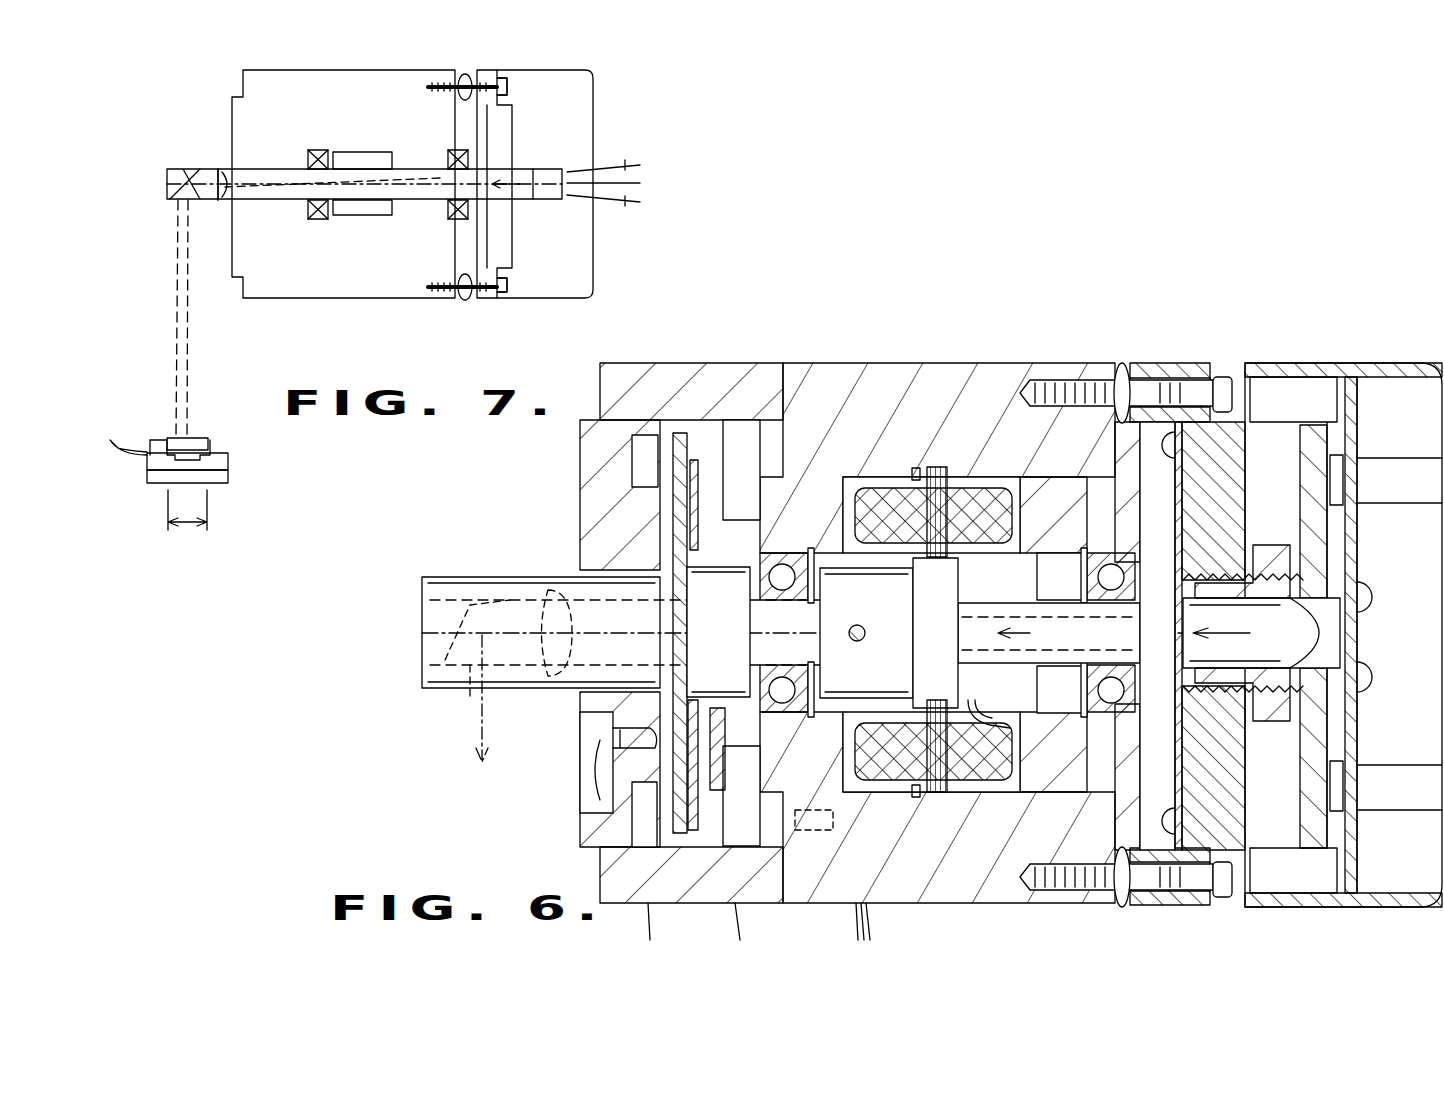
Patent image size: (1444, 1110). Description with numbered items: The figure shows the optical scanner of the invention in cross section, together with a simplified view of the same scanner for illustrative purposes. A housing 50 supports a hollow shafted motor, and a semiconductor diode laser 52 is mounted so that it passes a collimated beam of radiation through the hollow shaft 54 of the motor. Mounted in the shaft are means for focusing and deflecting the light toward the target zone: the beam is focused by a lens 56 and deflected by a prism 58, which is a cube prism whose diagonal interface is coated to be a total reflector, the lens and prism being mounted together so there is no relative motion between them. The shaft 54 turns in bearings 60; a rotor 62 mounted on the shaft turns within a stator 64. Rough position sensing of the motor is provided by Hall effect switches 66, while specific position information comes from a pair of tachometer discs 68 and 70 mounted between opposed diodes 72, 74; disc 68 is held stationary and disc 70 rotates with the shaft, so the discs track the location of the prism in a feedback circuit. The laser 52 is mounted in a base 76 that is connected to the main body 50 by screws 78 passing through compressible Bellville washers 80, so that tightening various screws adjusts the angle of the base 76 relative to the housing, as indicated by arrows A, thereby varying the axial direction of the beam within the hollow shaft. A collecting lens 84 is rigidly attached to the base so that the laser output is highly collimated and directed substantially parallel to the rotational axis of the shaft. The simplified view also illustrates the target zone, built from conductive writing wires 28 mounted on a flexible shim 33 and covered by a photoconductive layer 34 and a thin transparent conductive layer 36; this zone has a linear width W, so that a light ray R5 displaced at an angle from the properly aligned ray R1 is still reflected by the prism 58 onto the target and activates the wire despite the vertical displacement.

In FIG. 7, the conductive writing elements or wires 28 is at (228, 458).
In FIG. 7, the flexible support member or shim 33 is at (228, 480).
In FIG. 7, the photoconductive layer 34 is at (208, 448).
In FIG. 7, the conductive layer 36 is at (200, 436).
In FIG. 7, the housing 50 is at (297, 70).
In FIG. 6, the housing 50 is at (826, 345).
In FIG. 7, the semiconductor diode laser 52 is at (551, 200).
In FIG. 6, the semiconductor diode laser 52 is at (1350, 633).
In FIG. 7, the shaft 54 is at (262, 200).
In FIG. 6, the shaft 54 is at (1065, 662).
In FIG. 7, the lens 56 is at (220, 168).
In FIG. 6, the lens 56 is at (554, 577).
In FIG. 7, the prism 58 is at (188, 170).
In FIG. 6, the prism 58 is at (445, 655).
In FIG. 7, the bearings 60 is at (318, 219).
In FIG. 6, the bearings 60 is at (784, 562).
In FIG. 6, the rotor 62 is at (935, 612).
In FIG. 6, the stator 64 is at (940, 467).
In FIG. 6, the Hall effect switches 66 is at (972, 790).
In FIG. 6, the tachometer disc 68 is at (692, 800).
In FIG. 6, the tachometer disc 70 is at (680, 538).
In FIG. 6, the diode 72 is at (712, 735).
In FIG. 6, the diode 74 is at (620, 745).
In FIG. 7, the base 76 is at (595, 76).
In FIG. 6, the base 76 is at (1322, 356).
In FIG. 7, the screws 78 is at (508, 80).
In FIG. 6, the screws 78 is at (1222, 376).
In FIG. 7, the Bellville washers 80 is at (468, 74).
In FIG. 6, the Bellville washers 80 is at (1126, 364).
In FIG. 7, the collecting lens 84 is at (528, 172).
In FIG. 6, the collecting lens 84 is at (1288, 645).
In FIG. 7, the arrows A is at (632, 185).
In FIG. 7, the linear width W is at (188, 525).
In FIG. 7, the light ray R1 is at (190, 330).
In FIG. 7, the light ray R5 is at (404, 136).